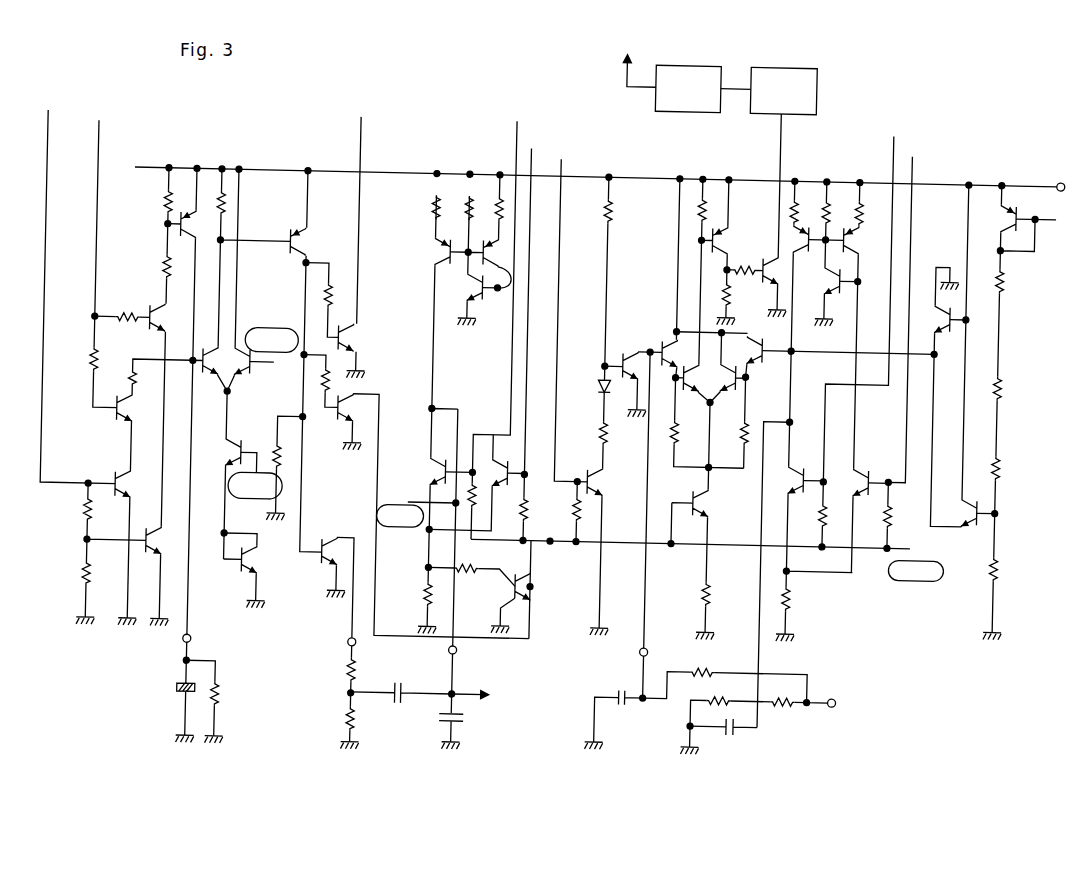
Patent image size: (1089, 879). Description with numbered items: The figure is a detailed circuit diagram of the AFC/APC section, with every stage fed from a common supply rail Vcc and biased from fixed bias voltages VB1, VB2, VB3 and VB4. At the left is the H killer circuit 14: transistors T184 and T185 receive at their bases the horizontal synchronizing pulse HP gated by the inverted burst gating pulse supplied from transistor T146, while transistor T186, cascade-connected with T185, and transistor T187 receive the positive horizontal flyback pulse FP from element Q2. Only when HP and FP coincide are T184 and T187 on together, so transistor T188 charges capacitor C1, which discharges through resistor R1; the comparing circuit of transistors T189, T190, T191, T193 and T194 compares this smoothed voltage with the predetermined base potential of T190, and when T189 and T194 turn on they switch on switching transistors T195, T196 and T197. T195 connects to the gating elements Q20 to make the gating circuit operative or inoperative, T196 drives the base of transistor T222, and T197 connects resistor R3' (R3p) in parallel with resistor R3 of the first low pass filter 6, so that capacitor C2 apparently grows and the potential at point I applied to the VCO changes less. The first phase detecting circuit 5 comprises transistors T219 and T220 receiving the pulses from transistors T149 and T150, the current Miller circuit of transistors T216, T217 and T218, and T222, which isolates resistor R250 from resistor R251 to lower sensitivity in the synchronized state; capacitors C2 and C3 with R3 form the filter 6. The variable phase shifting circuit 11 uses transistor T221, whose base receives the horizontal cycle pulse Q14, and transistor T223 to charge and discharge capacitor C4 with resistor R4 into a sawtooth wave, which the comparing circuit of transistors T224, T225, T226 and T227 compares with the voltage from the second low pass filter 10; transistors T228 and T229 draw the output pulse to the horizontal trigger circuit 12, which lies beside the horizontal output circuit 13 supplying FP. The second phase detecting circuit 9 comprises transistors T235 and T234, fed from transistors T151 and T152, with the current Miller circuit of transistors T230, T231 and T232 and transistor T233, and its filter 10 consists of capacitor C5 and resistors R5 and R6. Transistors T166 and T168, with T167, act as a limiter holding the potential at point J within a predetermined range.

The H killer circuit 14 is at (252, 394).
The first phase detecting circuit 5 is at (479, 506).
The first low pass filter 6 is at (408, 698).
The second phase detecting circuit 9 is at (808, 385).
The second low pass filter 10 is at (785, 695).
The variable phase shifting circuit 11 is at (678, 264).
The horizontal trigger circuit 12 is at (768, 91).
The horizontal output circuit 13 is at (664, 72).
The point I is at (437, 402).
The point J is at (796, 334).
The horizontal flyback pulse FP is at (621, 44).
The voltage controlled oscillator VCO is at (492, 695).
The supply voltage Vcc is at (611, 166).
The bias voltage VB1 is at (707, 558).
The bias voltage VB2 is at (416, 514).
The bias voltage VB3 is at (255, 485).
The bias voltage VB4 is at (272, 339).
The element Q2 is at (73, 283).
The input Q14 is at (566, 309).
The inputs Q20, Q21 Q20 is at (361, 205).
The transistor T146 is at (97, 254).
The transistor T149 is at (538, 295).
The transistor T150 is at (497, 282).
The transistor T151 is at (911, 342).
The transistor T152 is at (864, 319).
The transistor T166 is at (954, 305).
The transistor T167 is at (1003, 208).
The transistor T168 is at (970, 371).
The transistor T184 is at (152, 306).
The transistor T185 is at (124, 420).
The transistor T186 is at (123, 486).
The transistor T187 is at (170, 553).
The transistor T188 is at (189, 220).
The transistor T189 is at (221, 382).
The transistor T190 is at (239, 377).
The transistor T191 is at (223, 474).
The transistor T193 is at (266, 578).
The transistor T194 is at (319, 361).
The switching transistor T195 is at (343, 336).
The switching transistor T196 is at (356, 432).
The switching transistor T197 is at (330, 560).
The transistor T216 is at (452, 245).
The transistor T217 is at (505, 292).
The transistor T218 is at (485, 280).
The transistor T219 is at (452, 466).
The transistor T220 is at (515, 454).
The transistor T221 is at (599, 476).
The transistor T222 is at (522, 580).
The transistor T223 is at (650, 325).
The transistor T224 is at (672, 335).
The transistor T225 is at (698, 366).
The transistor T226 is at (727, 382).
The transistor T227 is at (804, 361).
The transistor T228 is at (735, 252).
The transistor T229 is at (768, 278).
The transistor T230 is at (797, 212).
The transistor T231 is at (847, 228).
The transistor T232 is at (826, 296).
The transistor T233 is at (714, 507).
The transistor T234 is at (809, 466).
The transistor T235 is at (861, 475).
The resistor R1 is at (215, 701).
The resistor R3 is at (357, 714).
The resistor R3' R3p is at (358, 668).
The resistor R4 is at (740, 675).
The resistor R5 is at (706, 714).
The resistor R6 is at (768, 690).
The resistor R250 is at (475, 560).
The resistor R251 is at (436, 587).
The capacitor C1 is at (188, 688).
The capacitor C2 is at (401, 680).
The capacitor C3 is at (467, 579).
The capacitor C4 is at (620, 550).
The capacitor C5 is at (723, 739).